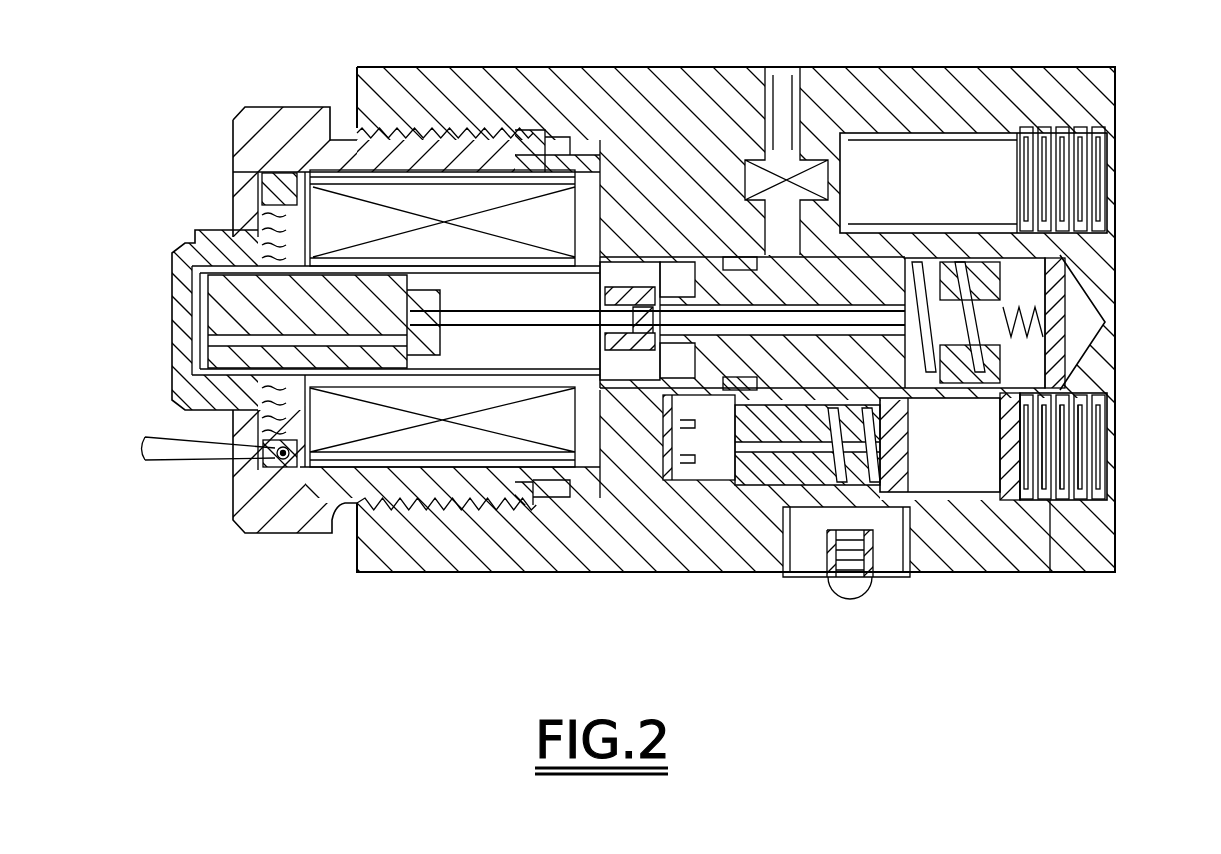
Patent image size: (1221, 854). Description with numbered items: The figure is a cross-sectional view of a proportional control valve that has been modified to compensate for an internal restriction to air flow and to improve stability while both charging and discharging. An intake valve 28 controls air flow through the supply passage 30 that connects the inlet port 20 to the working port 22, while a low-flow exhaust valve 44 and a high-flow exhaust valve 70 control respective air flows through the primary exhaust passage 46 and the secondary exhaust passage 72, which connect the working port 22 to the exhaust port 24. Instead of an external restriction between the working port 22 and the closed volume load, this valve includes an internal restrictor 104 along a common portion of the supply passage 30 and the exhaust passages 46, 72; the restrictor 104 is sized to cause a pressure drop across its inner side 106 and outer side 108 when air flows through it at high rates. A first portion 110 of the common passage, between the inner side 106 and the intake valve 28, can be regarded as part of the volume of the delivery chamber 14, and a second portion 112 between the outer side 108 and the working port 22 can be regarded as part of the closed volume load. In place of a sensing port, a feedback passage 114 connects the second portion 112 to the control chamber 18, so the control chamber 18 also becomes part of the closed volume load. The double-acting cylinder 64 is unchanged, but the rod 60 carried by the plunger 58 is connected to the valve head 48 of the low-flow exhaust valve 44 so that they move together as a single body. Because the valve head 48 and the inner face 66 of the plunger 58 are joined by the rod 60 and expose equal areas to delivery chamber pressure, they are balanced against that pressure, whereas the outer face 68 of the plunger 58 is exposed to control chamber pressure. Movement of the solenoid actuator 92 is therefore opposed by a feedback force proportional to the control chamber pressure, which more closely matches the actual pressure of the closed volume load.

The delivery chamber 14 is at (895, 262).
The control chamber 18 is at (1050, 250).
The inlet port 20 is at (1103, 138).
The working port 22 is at (1110, 490).
The exhaust port 24 is at (893, 572).
The intake valve 28 is at (887, 268).
The supply passage 30 is at (786, 161).
The low-flow exhaust valve 44 is at (645, 325).
The primary exhaust passage 46 is at (655, 400).
The valve head 48 is at (653, 325).
The plunger 58 is at (952, 268).
The rod 60 is at (728, 335).
The double-acting cylinder 64 is at (1006, 262).
The inner face 66 is at (955, 378).
The outer face 68 is at (1023, 317).
The high-flow exhaust valve 70 is at (917, 477).
The secondary exhaust passage 72 is at (862, 455).
The solenoid actuator 92 is at (224, 262).
The internal restrictor 104 is at (1028, 448).
The inner side 106 is at (1000, 473).
The outer side 108 is at (1030, 418).
The first portion 110 is at (962, 490).
The second portion 112 is at (1058, 500).
The feedback passage 114 is at (1040, 400).